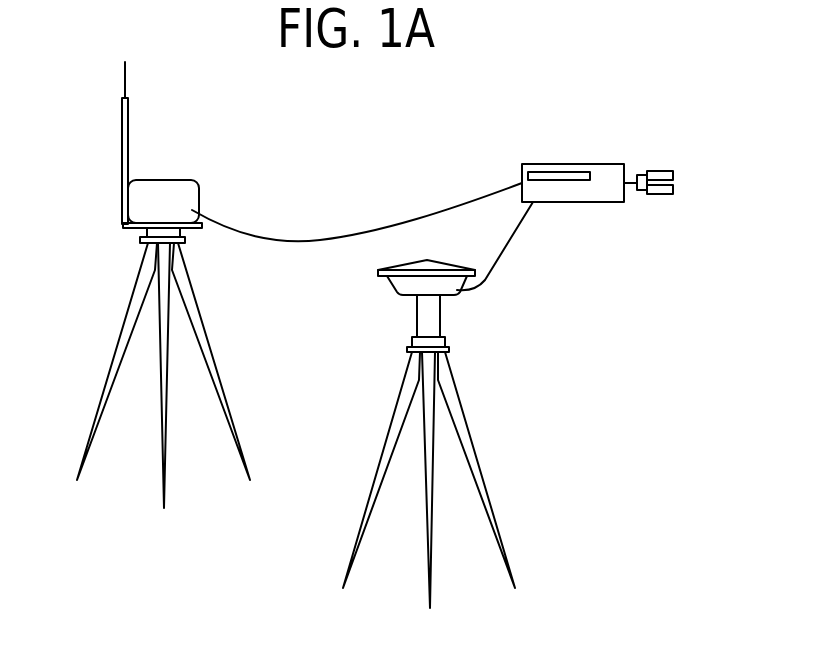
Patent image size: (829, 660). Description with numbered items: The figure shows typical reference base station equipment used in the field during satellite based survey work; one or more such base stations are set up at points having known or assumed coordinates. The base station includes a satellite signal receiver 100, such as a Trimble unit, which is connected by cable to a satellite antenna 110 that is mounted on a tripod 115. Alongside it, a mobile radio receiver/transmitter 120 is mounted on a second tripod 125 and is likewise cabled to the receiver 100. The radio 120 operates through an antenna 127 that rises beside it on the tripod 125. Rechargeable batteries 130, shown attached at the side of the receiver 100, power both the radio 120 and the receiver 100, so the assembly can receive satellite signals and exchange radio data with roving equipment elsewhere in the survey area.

The satellite signal receiver 100 is at (555, 164).
The satellite antenna 110 is at (407, 290).
The tripod 115 is at (482, 465).
The mobile radio receiver/transmitter 120 is at (200, 198).
The tripod 125 is at (213, 347).
The antenna 127 is at (122, 121).
The rechargeable batteries 130 is at (662, 195).